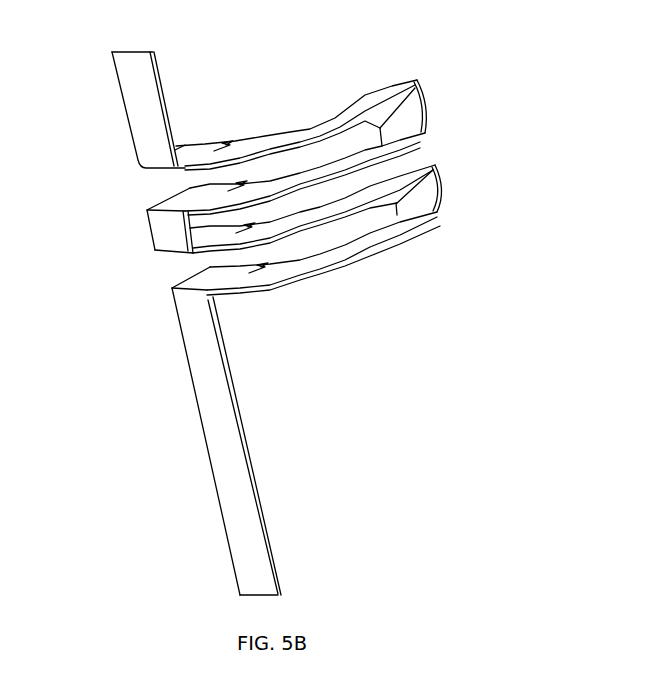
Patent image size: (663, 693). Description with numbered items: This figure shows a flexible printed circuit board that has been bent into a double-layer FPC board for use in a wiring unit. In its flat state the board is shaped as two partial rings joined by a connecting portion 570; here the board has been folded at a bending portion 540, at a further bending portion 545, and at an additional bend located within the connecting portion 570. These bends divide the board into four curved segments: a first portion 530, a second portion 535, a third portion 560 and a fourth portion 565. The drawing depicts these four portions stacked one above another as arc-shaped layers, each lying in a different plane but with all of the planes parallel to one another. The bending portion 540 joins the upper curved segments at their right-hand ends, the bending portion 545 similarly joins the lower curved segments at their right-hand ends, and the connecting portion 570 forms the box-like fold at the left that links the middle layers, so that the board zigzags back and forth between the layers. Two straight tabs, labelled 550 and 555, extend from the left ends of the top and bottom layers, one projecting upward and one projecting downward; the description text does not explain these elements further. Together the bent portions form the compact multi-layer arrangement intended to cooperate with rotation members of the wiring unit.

The first portion 530 is at (312, 133).
The second portion 535 is at (343, 255).
The bending portion 540 is at (411, 103).
The bending portion 545 is at (422, 193).
The first tab 550 is at (145, 135).
The second tab 555 is at (212, 375).
The third portion 560 is at (377, 148).
The fourth portion 565 is at (400, 180).
The connecting portion 570 is at (167, 240).